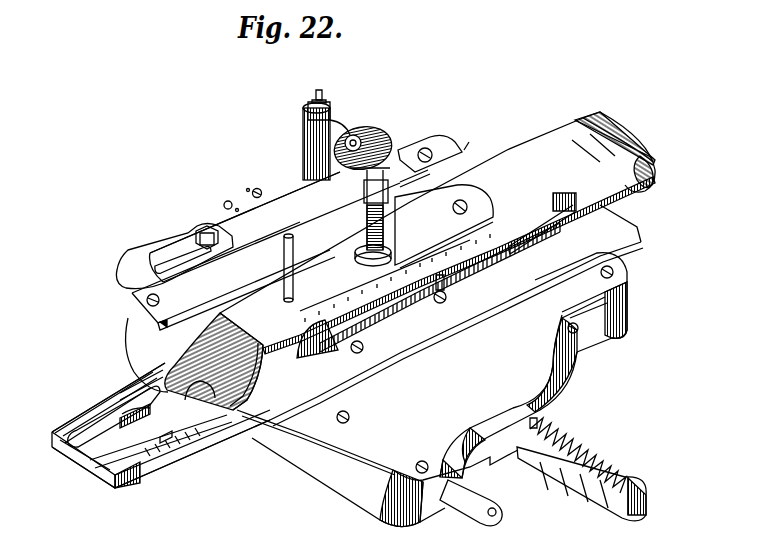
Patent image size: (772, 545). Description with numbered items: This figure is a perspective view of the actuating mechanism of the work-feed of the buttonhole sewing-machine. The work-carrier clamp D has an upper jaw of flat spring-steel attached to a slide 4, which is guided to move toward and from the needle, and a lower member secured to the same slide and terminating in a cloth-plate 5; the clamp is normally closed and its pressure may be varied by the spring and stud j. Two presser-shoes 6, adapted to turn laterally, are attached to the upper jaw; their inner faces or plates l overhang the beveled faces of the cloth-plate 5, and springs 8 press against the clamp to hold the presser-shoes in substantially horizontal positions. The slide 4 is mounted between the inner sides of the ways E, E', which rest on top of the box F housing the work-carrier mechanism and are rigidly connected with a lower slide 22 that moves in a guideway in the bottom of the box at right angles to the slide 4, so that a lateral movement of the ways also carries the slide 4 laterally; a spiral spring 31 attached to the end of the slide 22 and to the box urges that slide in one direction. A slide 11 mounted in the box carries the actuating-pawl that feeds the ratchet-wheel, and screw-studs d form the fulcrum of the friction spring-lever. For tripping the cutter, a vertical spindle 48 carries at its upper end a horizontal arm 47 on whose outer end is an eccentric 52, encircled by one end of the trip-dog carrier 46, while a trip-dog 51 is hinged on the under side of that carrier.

The spindle 48 is at (322, 94).
The arm 47 is at (338, 118).
The eccentric 52 is at (390, 131).
The bar E' is at (275, 203).
The trip-dog 51 is at (140, 268).
The trip-dog carrier 46 is at (260, 207).
The spring and stud j is at (377, 210).
The clamp D is at (437, 233).
The slide 4 is at (404, 366).
The ways E is at (604, 296).
The box F is at (592, 342).
The screw-studs d is at (576, 335).
The spiral spring 31 is at (598, 450).
The lower slide 22 is at (590, 495).
The slide 11 is at (494, 499).
The cloth-plate 5 is at (80, 462).
The presser-shoes 6 is at (83, 405).
The springs 8 is at (55, 428).
The inner faces or plates l is at (56, 452).